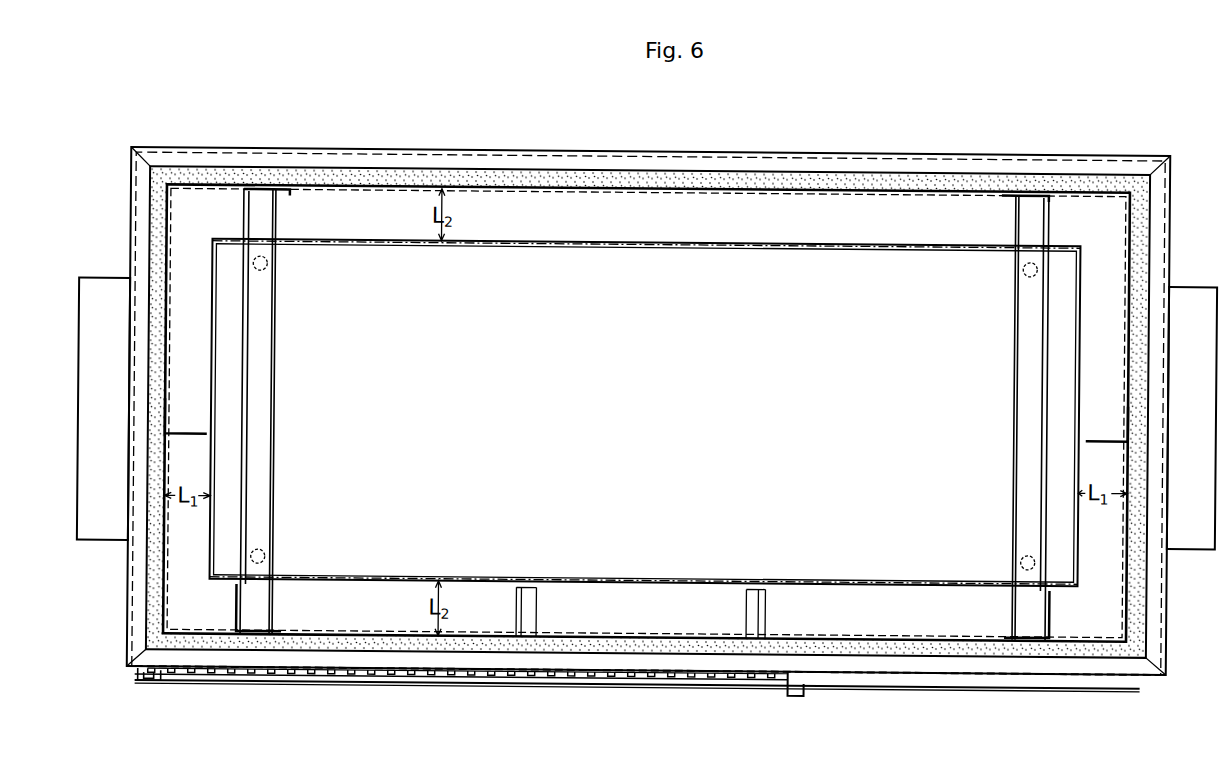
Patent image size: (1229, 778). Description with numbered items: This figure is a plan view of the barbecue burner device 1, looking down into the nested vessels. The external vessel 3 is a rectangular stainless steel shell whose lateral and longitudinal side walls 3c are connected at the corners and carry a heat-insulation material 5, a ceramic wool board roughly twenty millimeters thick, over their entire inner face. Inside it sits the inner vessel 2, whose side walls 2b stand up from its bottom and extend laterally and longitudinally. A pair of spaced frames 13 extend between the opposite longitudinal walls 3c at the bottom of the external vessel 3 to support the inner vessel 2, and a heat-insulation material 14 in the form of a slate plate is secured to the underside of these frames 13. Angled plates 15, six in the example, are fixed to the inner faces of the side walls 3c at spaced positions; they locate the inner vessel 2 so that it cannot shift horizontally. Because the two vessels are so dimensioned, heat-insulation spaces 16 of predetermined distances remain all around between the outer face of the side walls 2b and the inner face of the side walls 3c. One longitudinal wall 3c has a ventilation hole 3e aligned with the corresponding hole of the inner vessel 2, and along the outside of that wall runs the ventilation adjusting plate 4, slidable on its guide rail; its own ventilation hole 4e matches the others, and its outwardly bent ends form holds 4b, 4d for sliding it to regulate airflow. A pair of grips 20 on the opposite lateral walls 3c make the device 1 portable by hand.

The barbecue burner device 1 is at (510, 135).
The inner vessel 2 is at (532, 240).
The side walls 2b is at (563, 243).
The external vessel 3 is at (298, 146).
The side walls 3c is at (350, 151).
The ventilation hole 3e is at (527, 626).
The ventilation adjusting plate 4 is at (768, 682).
The hold 4b is at (794, 692).
The hold 4d is at (162, 684).
The ventilation hole 4e is at (716, 685).
The heat-insulation material 5 is at (473, 170).
The frames 13 is at (278, 594).
The heat-insulation material 14 is at (331, 238).
The angled plates 15 is at (260, 208).
The heat-insulation spaces 16 is at (392, 200).
The grips 20 is at (100, 278).